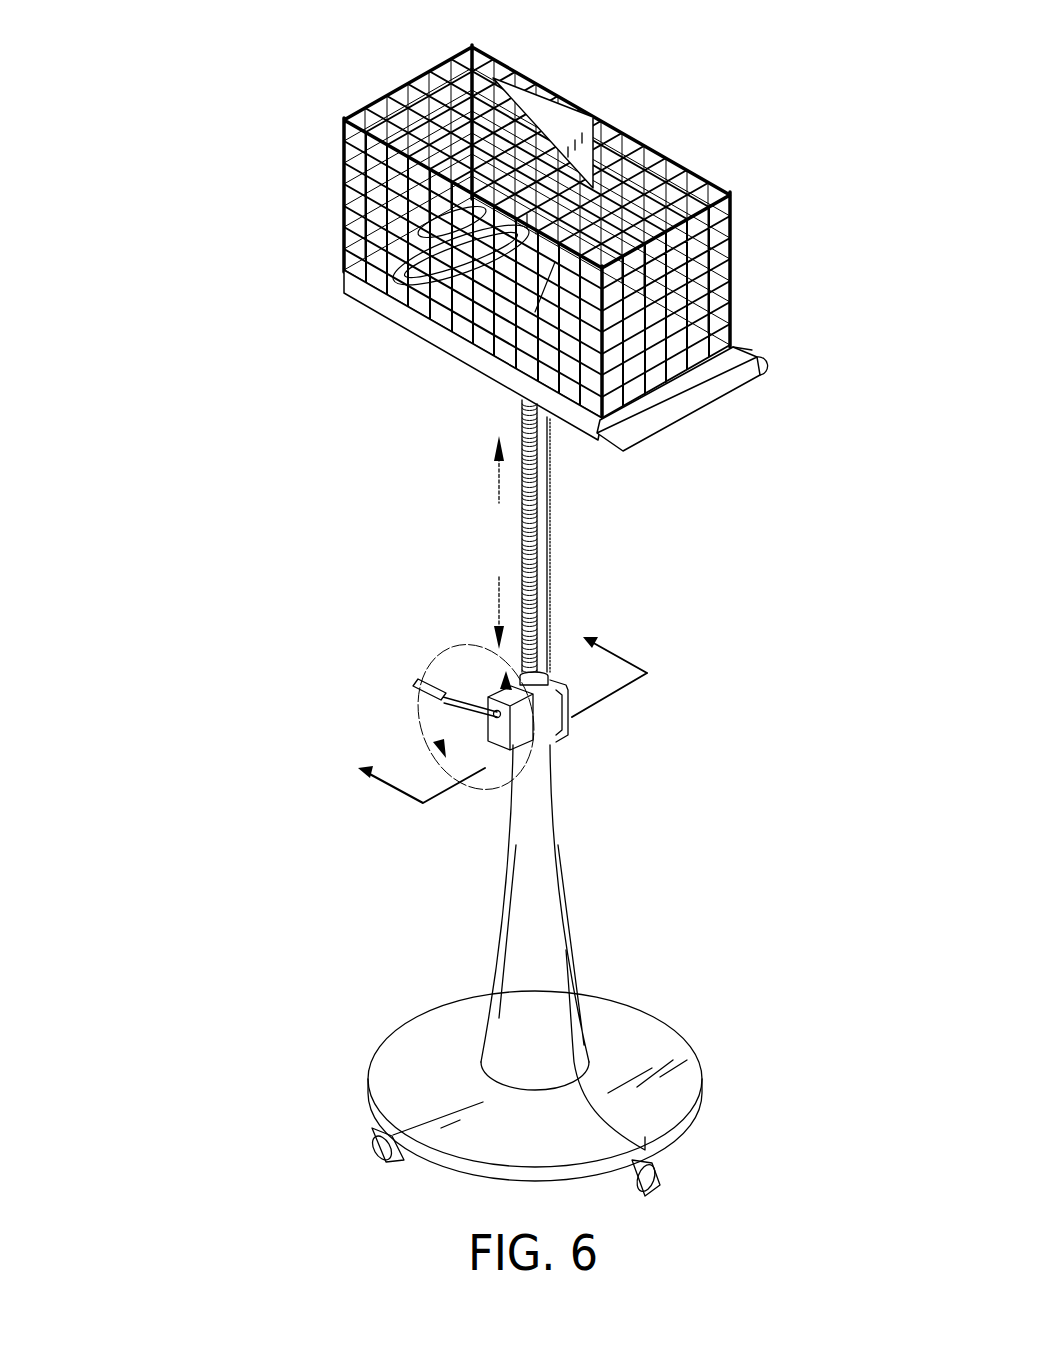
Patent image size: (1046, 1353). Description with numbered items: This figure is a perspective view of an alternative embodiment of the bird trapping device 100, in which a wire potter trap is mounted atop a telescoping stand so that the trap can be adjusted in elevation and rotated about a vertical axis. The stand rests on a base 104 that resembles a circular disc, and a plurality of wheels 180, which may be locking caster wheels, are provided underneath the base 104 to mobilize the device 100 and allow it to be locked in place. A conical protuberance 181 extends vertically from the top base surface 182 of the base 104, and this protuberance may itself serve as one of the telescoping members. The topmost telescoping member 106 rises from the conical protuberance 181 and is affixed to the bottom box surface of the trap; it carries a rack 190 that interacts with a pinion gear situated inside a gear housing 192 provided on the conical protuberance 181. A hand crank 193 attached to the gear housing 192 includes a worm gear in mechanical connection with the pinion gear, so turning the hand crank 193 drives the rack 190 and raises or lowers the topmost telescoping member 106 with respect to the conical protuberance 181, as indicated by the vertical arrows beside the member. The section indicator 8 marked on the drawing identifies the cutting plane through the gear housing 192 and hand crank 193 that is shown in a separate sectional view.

The bird trapping device 100 is at (179, 138).
The base 104 is at (597, 1056).
The topmost telescoping member 106 is at (548, 494).
The plurality of wheels 180 is at (662, 1177).
The conical protuberance 181 is at (514, 923).
The top base surface 182 is at (627, 1028).
The rack 190 is at (522, 522).
The gear housing 192 is at (513, 733).
The hand crank 193 is at (430, 688).
The section line 8- 8 is at (480, 693).